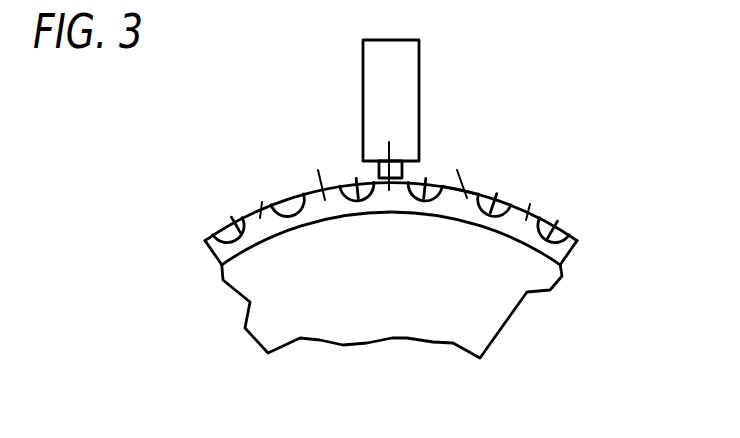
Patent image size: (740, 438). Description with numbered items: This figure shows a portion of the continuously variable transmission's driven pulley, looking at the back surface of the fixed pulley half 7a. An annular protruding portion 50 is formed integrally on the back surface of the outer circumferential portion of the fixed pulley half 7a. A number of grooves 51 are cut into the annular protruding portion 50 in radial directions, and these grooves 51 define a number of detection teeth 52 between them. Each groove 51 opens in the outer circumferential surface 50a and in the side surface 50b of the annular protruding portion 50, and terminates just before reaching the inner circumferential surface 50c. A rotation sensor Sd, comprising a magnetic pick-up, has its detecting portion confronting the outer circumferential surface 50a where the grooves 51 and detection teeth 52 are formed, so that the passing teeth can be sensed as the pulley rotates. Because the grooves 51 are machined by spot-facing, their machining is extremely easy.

The annular protruding portion 50 is at (413, 214).
The outer circumferential surface 50a is at (247, 212).
The side surface 50b is at (381, 213).
The inner circumferential surface 50c is at (282, 236).
The grooves 51 is at (221, 219).
The detection teeth 52 is at (398, 167).
The fixed pulley half 7a is at (489, 167).
The rotation sensor Sd is at (408, 80).